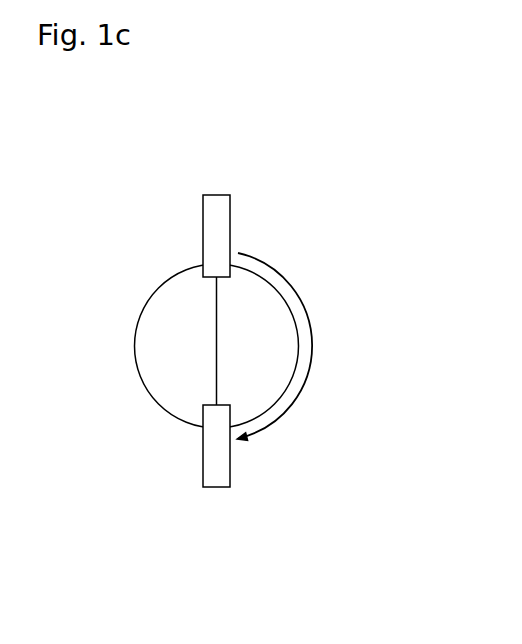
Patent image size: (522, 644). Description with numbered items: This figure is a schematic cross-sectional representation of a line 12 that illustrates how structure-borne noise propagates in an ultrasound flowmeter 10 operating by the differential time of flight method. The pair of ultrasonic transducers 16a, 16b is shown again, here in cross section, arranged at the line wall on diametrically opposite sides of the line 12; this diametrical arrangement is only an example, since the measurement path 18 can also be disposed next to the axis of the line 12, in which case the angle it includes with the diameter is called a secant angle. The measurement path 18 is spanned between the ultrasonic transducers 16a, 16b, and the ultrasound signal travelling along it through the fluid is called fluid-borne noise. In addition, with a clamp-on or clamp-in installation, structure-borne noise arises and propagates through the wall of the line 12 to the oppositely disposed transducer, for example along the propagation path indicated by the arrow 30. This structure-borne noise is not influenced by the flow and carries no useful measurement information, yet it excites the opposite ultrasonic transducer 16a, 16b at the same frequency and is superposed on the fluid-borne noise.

The ultrasound flowmeter 10 is at (217, 259).
The line 12 is at (203, 338).
The ultrasonic transducer 16a is at (262, 233).
The ultrasonic transducer 16b is at (168, 464).
The measurement path 18 is at (250, 341).
The arrow 30 is at (308, 347).